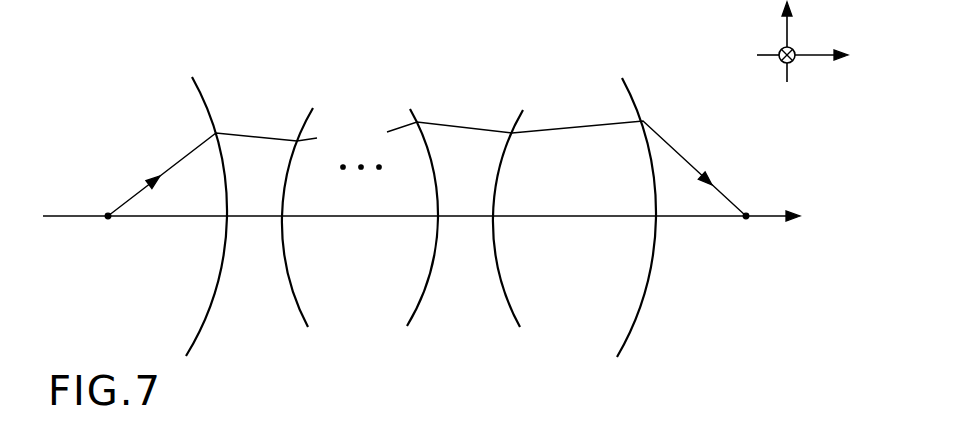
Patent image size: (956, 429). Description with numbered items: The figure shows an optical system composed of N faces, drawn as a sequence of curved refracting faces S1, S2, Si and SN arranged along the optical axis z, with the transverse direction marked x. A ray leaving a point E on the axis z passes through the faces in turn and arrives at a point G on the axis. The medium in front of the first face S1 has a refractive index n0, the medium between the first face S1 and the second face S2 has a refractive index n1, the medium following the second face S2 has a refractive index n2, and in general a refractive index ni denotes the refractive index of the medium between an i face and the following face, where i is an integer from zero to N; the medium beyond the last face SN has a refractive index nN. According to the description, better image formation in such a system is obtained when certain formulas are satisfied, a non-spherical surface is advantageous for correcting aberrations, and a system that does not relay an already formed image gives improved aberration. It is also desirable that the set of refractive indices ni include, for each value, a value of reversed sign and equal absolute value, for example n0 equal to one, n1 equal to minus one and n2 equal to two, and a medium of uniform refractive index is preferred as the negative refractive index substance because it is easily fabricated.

The first face S1 is at (203, 203).
The second face S2 is at (304, 203).
The i face Si is at (419, 203).
The N face SN is at (643, 217).
The refractive index of medium before first face n0 is at (167, 260).
The refractive index of medium between first and second faces n1 is at (255, 260).
The refractive index of medium after second face n2 is at (362, 260).
The refractive index of medium between i face and i+1 face ni is at (469, 260).
The refractive index of medium after N face nN is at (686, 260).
The object point E is at (108, 232).
The image point G is at (747, 234).
The optical axis (z axis) z is at (452, 111).
The x axis x is at (786, 94).